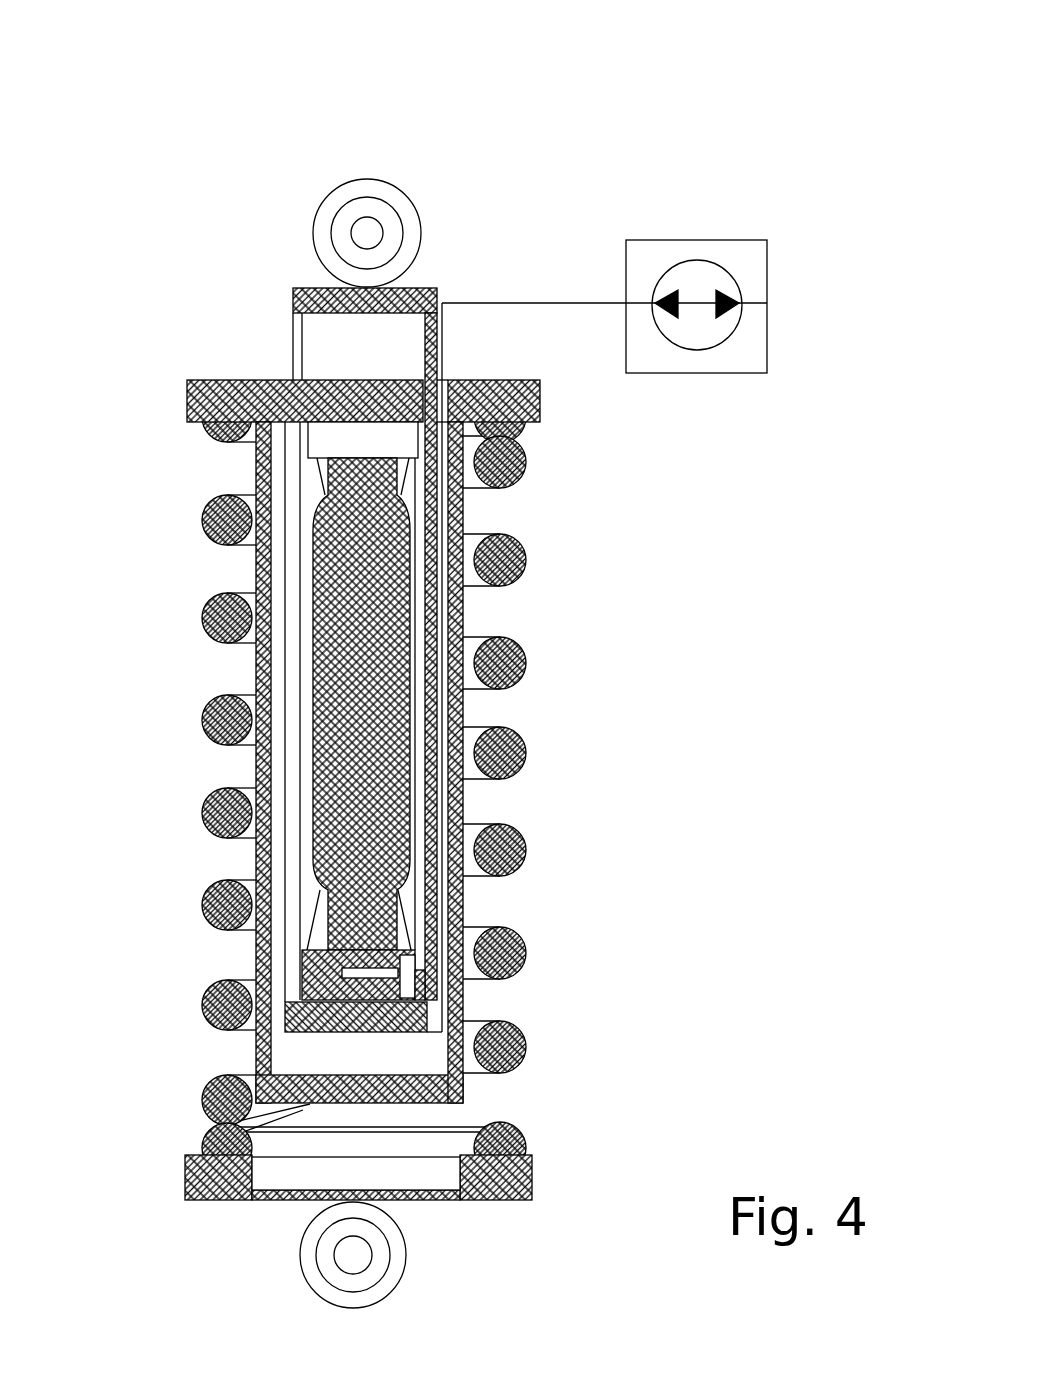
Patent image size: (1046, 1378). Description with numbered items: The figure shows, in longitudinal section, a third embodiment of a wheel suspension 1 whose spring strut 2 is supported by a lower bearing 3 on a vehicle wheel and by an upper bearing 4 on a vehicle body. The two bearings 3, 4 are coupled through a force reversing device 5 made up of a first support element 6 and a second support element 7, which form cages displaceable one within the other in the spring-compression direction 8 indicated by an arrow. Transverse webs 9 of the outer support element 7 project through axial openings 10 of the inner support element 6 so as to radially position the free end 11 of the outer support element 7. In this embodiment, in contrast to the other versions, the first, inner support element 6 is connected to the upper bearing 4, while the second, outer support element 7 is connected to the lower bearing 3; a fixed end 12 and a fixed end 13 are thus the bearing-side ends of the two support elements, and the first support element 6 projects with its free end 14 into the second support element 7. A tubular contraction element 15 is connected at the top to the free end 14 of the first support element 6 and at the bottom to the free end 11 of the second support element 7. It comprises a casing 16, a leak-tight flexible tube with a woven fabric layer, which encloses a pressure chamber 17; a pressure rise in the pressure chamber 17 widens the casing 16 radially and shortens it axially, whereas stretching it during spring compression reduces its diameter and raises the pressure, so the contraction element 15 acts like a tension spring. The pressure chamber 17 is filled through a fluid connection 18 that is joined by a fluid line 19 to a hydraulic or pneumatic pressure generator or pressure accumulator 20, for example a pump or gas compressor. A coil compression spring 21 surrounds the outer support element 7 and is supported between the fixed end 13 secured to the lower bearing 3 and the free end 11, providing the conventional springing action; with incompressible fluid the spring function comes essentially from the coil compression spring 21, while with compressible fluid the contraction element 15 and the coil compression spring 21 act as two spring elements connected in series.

The wheel suspension 1 is at (132, 128).
The spring strut 2 is at (148, 670).
The lower bearing 3 is at (352, 1255).
The upper bearing 4 is at (367, 233).
The force reversing device 5 is at (245, 958).
The first support element 6 is at (441, 521).
The second support element 7 is at (463, 905).
The spring-compression direction 8 is at (150, 775).
The transverse webs 9 is at (262, 396).
The axial openings 10 is at (295, 328).
The free end 11 is at (385, 400).
The fixed end 12 is at (428, 292).
The fixed end 13 is at (495, 1200).
The free end 14 is at (310, 1035).
The tubular contraction element 15 is at (420, 629).
The casing 16 is at (408, 806).
The pressure chamber 17 is at (395, 708).
The fluid connection 18 is at (424, 990).
The fluid line 19 is at (545, 301).
The pressure generator or pressure accumulator 20 is at (740, 250).
The coil compression spring 21 is at (217, 713).